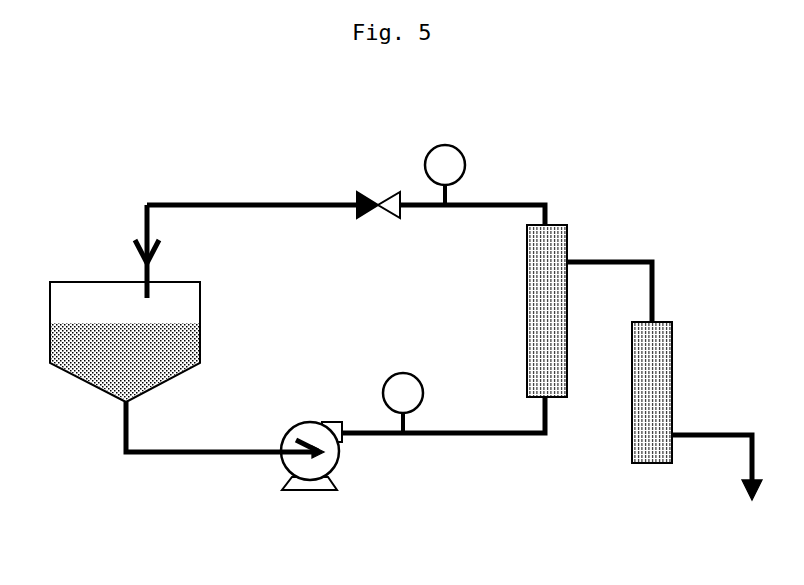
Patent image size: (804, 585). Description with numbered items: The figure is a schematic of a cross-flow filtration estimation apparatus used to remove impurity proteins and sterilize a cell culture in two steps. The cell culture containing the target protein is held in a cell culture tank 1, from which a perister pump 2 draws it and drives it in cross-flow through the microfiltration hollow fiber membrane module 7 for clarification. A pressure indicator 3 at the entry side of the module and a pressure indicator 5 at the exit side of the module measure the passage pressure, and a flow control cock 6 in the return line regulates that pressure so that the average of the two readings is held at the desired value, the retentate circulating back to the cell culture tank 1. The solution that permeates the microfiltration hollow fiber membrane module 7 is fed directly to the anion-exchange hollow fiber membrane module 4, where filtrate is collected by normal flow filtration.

The cell culture tank 1 is at (83, 276).
The perister pump 2 is at (287, 500).
The pressure indicator (at entry side of module) 3 is at (404, 373).
The anion-exchange hollow fiber membrane module 4 is at (678, 338).
The pressure indicator (at exit side of module) 5 is at (432, 148).
The flow control cock 6 is at (353, 192).
The microfiltration hollow fiber membrane module for clarification 7 is at (520, 328).